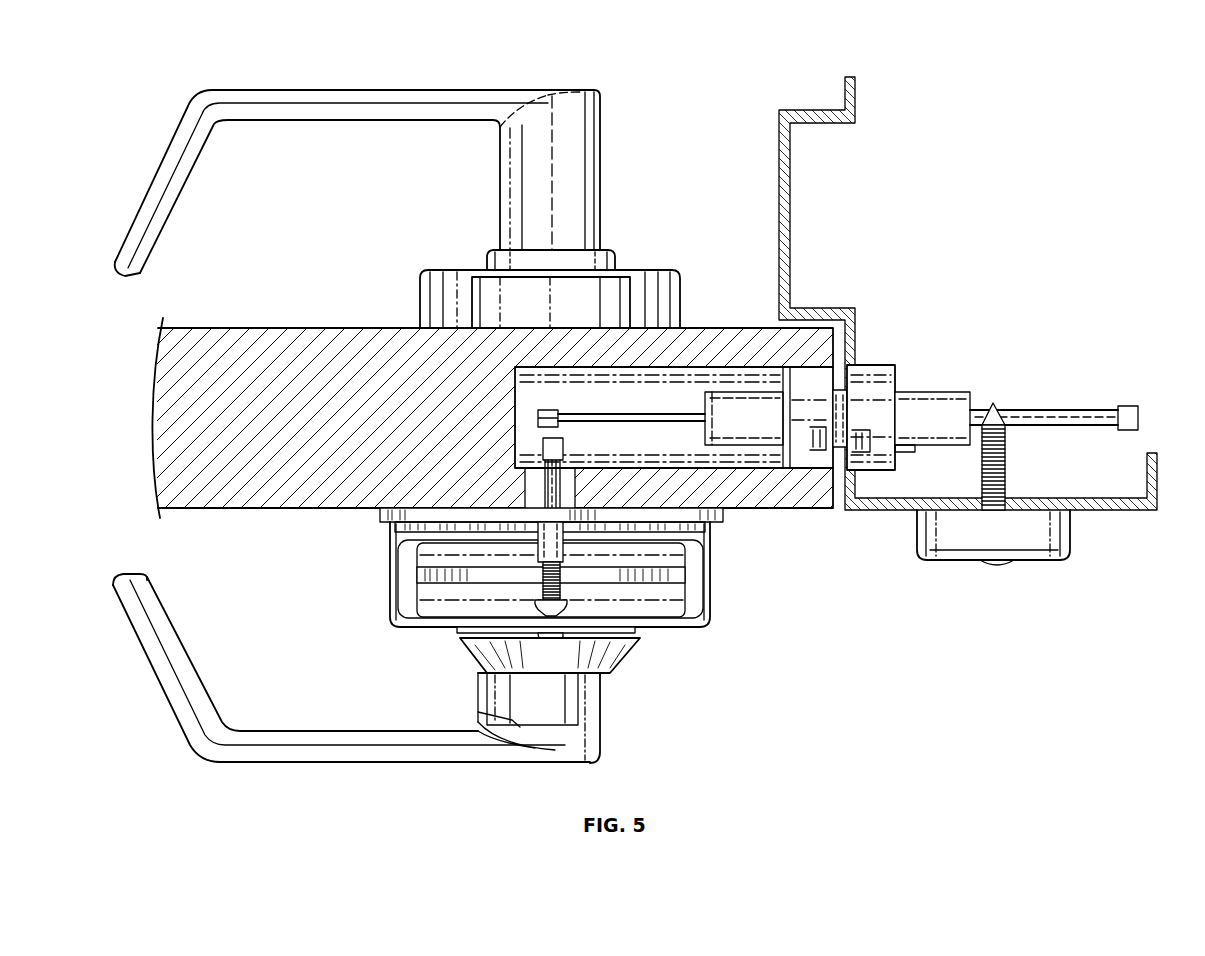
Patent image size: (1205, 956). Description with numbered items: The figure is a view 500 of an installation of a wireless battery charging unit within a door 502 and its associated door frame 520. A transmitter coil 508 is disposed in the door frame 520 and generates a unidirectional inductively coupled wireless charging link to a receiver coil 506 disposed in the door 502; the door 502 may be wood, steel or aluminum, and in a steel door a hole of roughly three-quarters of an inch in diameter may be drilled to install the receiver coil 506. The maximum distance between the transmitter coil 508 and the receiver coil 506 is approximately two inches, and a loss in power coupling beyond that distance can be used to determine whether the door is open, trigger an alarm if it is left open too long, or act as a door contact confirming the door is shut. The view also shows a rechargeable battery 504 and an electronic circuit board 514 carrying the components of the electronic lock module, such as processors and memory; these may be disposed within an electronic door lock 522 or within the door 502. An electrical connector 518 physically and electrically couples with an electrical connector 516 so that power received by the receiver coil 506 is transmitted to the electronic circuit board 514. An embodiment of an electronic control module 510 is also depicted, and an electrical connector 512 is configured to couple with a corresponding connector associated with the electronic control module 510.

The view 500 is at (1028, 152).
The door 502 is at (301, 510).
The rechargeable battery 504 is at (433, 607).
The receiver coil 506 is at (810, 470).
The transmitter coil 508 is at (892, 470).
The electronic control module 510 is at (1040, 563).
The electrical connector 512 is at (1128, 405).
The electronic circuit board 514 is at (667, 583).
The electrical connector 516 is at (515, 398).
The electrical connector 518 is at (565, 446).
The door frame 520 is at (790, 200).
The electronic door lock 522 is at (710, 590).